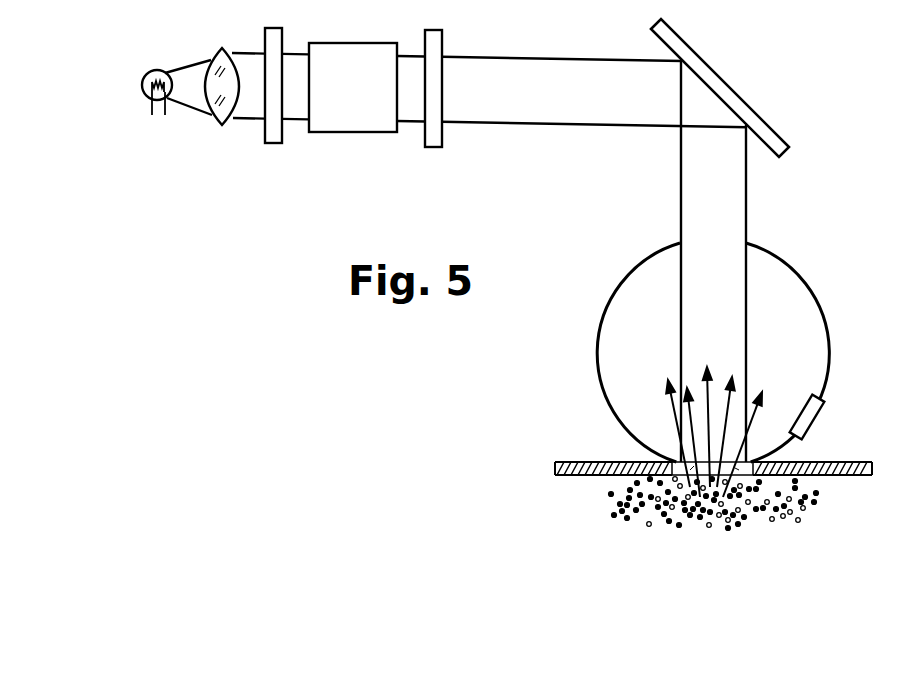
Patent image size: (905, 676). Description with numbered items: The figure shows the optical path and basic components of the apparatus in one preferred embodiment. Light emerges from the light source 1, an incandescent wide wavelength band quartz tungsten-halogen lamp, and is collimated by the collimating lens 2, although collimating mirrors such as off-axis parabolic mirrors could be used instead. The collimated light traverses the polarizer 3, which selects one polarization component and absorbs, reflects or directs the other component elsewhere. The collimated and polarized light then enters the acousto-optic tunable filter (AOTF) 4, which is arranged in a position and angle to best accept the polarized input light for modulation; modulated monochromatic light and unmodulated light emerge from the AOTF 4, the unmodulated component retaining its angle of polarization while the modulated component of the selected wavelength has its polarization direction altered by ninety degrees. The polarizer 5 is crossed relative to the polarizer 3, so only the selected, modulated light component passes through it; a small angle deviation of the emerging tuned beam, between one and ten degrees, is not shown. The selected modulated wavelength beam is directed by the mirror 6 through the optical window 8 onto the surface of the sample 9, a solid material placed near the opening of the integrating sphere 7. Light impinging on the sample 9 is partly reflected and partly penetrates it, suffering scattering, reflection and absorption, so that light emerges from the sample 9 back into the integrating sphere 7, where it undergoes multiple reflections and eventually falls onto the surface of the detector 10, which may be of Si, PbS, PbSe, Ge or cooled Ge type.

The light source 1 is at (142, 103).
The collimating lens 2 is at (222, 118).
The polarizer 3 is at (272, 128).
The acousto-optic tunable filter (AOTF) 4 is at (357, 113).
The polarizer 5 is at (432, 135).
The mirror 6 is at (755, 108).
The integrating sphere 7 is at (803, 280).
The optical window 8 is at (742, 472).
The sample 9 is at (703, 513).
The detector 10 is at (828, 403).